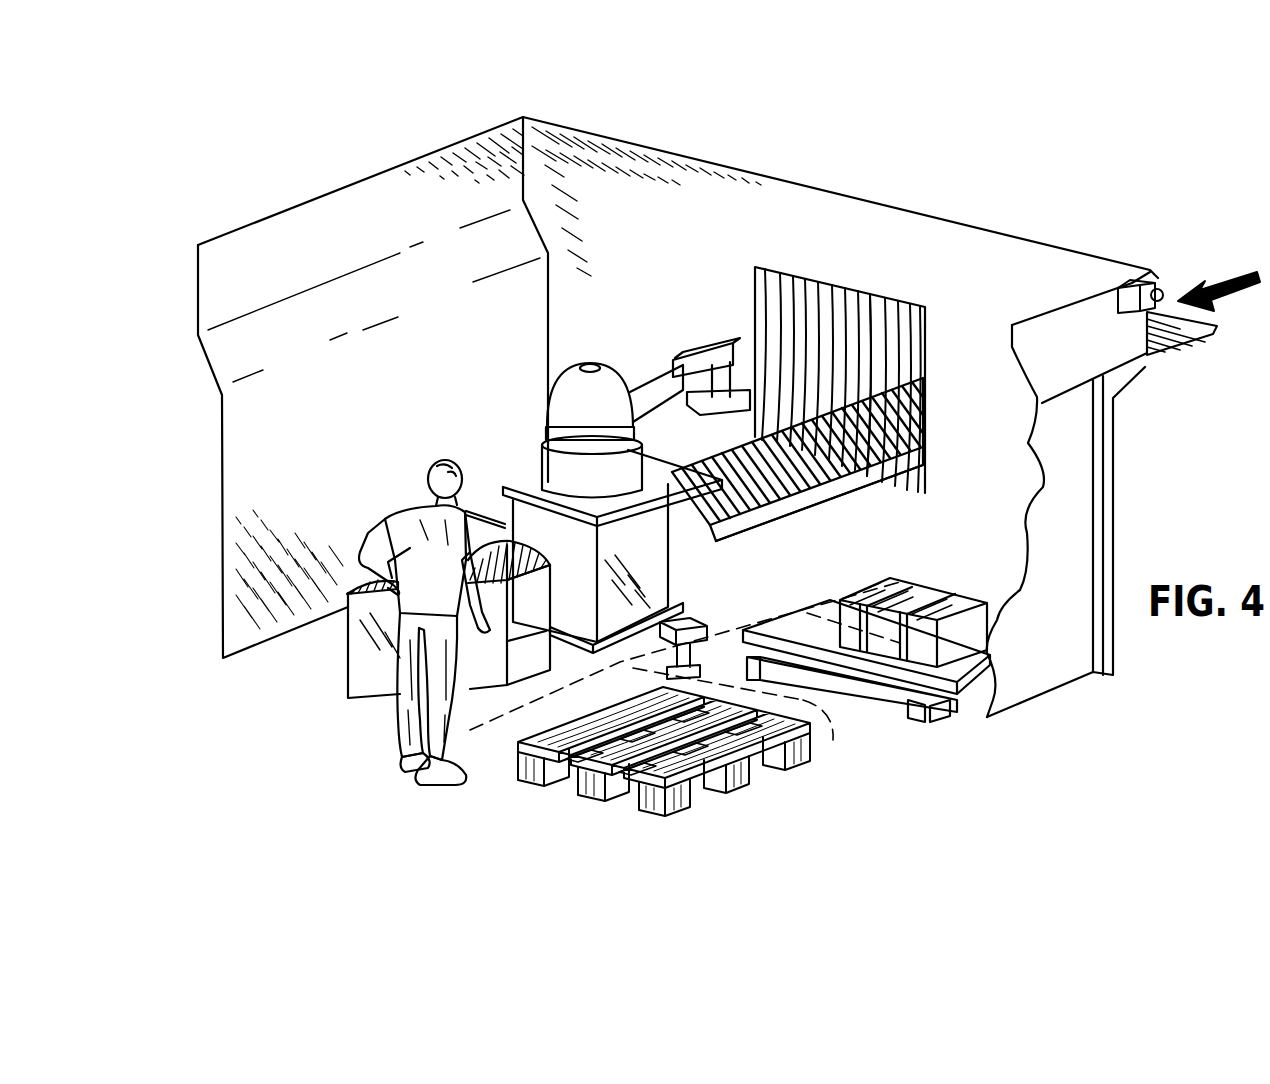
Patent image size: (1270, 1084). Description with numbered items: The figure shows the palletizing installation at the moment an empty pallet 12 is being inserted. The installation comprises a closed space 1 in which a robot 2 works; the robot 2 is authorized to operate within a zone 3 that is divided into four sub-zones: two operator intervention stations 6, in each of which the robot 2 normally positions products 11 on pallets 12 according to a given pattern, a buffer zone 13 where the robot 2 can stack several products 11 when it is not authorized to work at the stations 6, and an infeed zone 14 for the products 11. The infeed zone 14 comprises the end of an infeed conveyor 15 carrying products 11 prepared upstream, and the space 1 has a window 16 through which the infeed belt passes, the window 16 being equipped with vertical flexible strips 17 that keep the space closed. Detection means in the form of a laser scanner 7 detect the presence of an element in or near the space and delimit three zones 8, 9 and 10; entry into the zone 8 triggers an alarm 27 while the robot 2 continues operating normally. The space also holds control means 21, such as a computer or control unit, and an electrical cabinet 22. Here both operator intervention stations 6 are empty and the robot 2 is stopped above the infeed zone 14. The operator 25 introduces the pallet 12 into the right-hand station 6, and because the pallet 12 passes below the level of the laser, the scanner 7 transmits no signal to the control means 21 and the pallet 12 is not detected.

The closed space 1 is at (627, 220).
The robot 2 is at (582, 398).
The zone 3 is at (700, 448).
The operator intervention station 6 is at (786, 786).
The detection means / laser scanner 7 is at (690, 622).
The zone 8 is at (542, 731).
The zone 9 is at (638, 692).
The zone 10 is at (851, 687).
The product 11 is at (897, 590).
The pallet 12 is at (681, 810).
The buffer zone 13 is at (996, 656).
The infeed zone 14 is at (799, 506).
The infeed conveyor 15 is at (1178, 338).
The window 16 is at (795, 310).
The vertical flexible strips 17 is at (863, 323).
The control means 21 is at (372, 687).
The electrical cabinet 22 is at (509, 613).
The operator 25 is at (434, 772).
The alarm 27 is at (1165, 265).